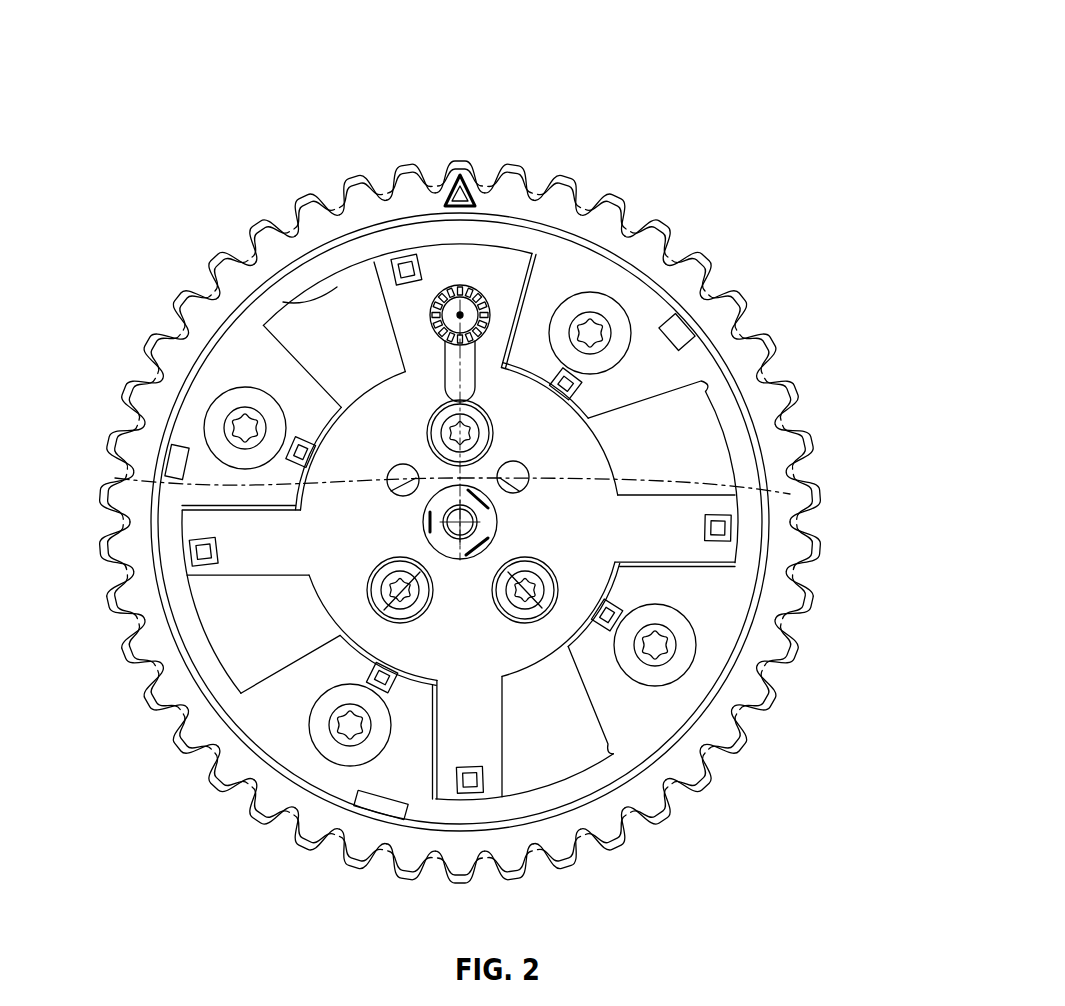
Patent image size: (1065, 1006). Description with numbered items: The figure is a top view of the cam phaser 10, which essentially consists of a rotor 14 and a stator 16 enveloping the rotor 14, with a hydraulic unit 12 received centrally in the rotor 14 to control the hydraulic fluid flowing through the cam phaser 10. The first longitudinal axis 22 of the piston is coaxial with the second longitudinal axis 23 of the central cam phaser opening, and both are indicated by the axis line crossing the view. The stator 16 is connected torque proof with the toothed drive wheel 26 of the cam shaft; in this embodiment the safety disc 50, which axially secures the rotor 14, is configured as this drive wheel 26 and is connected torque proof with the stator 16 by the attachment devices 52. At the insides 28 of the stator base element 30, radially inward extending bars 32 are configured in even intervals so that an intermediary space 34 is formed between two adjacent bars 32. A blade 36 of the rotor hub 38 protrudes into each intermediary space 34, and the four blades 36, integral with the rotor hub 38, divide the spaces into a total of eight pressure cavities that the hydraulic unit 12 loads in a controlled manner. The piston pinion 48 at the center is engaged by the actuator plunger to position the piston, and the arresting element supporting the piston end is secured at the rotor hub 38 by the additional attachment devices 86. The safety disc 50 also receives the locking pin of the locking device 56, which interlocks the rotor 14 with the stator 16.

The cam phaser 10 is at (845, 188).
The hydraulic unit 12 is at (403, 542).
The rotor 14 is at (614, 455).
The stator 16 is at (650, 282).
The first longitudinal axis 22 is at (115, 478).
The second longitudinal axis 23 is at (625, 486).
The drive wheel 26 is at (622, 193).
The insides 28 is at (283, 312).
The stator base element 30 is at (357, 252).
The bars 32 is at (272, 375).
The intermediary space 34 is at (358, 359).
The blade 36 is at (437, 263).
The rotor hub 38 is at (590, 478).
The piston pinion 48 is at (486, 527).
The safety disc 50 is at (459, 522).
The attachment devices 52 is at (623, 335).
The locking device 56 is at (470, 288).
The additional attachment devices 86 is at (528, 612).